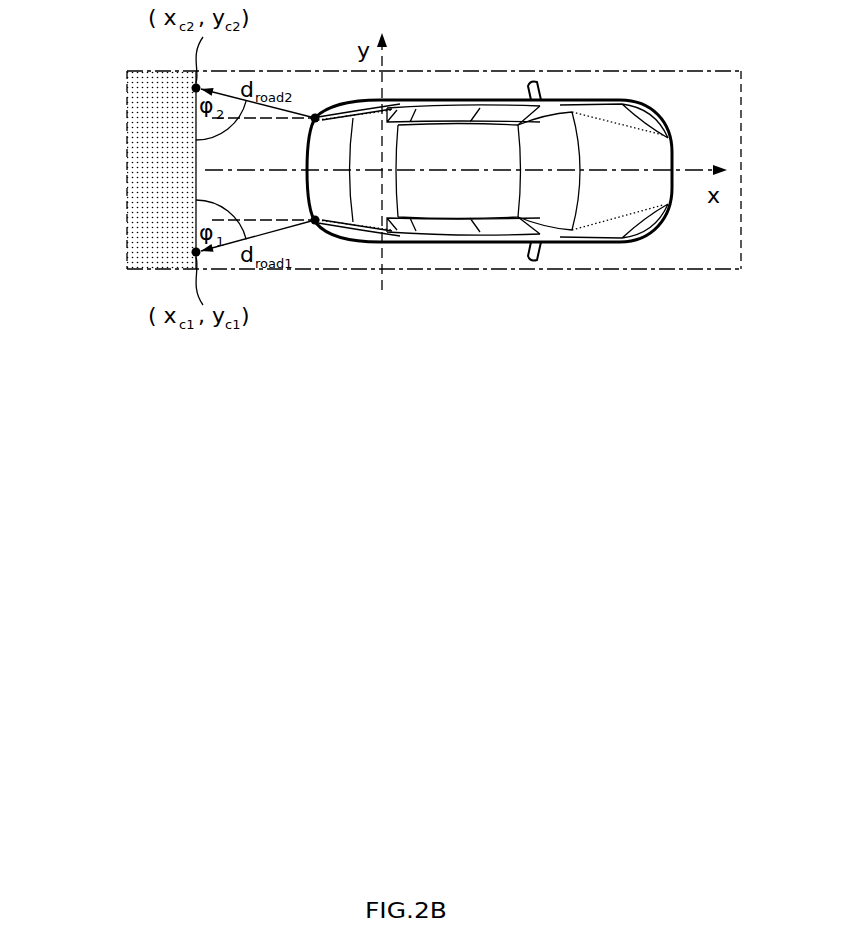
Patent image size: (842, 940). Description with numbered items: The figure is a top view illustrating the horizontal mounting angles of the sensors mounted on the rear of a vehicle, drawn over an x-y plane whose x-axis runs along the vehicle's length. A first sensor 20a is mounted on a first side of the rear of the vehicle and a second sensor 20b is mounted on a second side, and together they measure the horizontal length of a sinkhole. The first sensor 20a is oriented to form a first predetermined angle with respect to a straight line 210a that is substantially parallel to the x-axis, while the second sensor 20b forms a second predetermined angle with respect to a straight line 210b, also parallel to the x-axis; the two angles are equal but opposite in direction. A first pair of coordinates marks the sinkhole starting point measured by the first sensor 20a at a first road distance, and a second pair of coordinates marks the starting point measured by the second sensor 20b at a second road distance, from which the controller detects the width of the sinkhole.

The first sensor 20a is at (315, 224).
The second sensor 20b is at (315, 114).
The straight line 210a is at (196, 198).
The straight line 210b is at (196, 143).